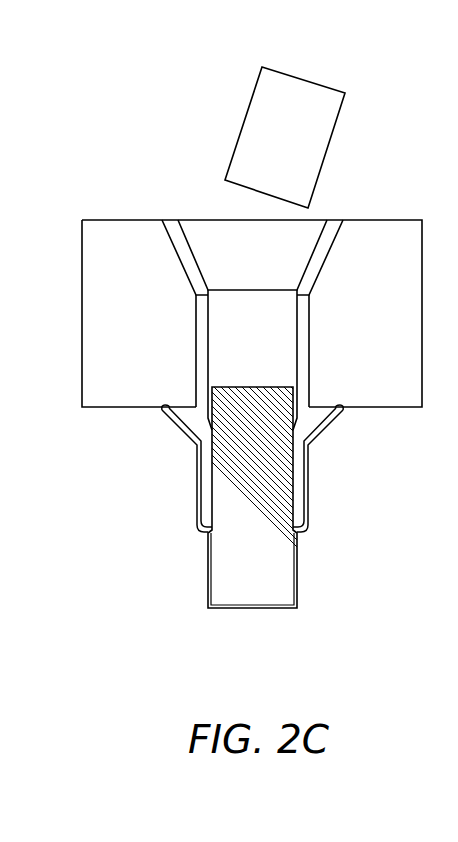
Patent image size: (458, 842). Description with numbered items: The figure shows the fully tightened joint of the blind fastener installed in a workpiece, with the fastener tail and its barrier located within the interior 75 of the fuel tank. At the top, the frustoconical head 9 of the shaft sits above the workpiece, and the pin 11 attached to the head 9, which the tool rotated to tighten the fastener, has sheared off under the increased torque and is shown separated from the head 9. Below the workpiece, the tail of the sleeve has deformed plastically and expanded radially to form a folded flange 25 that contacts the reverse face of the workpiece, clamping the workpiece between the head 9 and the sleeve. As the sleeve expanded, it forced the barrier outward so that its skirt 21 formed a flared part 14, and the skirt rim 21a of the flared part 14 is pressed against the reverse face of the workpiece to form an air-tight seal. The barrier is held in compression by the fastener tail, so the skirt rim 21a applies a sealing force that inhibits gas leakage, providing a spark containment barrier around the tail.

The frustoconical head 9 is at (203, 230).
The pin 11 is at (305, 107).
The flared part 14 is at (325, 435).
The skirt 21 is at (197, 493).
The skirt rim 21a is at (166, 408).
The folded flange 25 is at (335, 420).
The interior of the fuel tank 75 is at (143, 498).